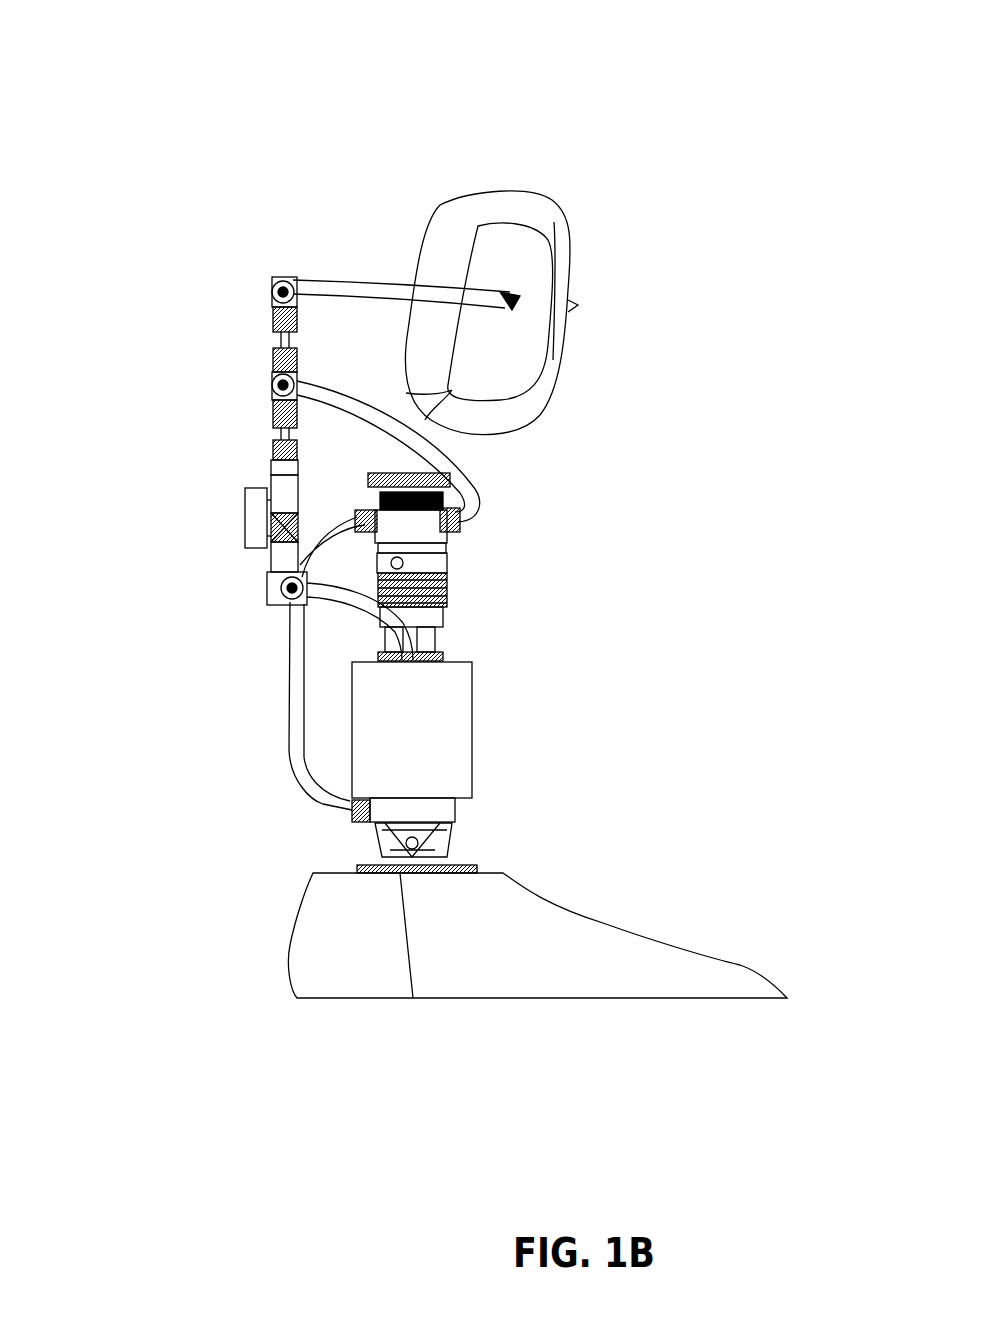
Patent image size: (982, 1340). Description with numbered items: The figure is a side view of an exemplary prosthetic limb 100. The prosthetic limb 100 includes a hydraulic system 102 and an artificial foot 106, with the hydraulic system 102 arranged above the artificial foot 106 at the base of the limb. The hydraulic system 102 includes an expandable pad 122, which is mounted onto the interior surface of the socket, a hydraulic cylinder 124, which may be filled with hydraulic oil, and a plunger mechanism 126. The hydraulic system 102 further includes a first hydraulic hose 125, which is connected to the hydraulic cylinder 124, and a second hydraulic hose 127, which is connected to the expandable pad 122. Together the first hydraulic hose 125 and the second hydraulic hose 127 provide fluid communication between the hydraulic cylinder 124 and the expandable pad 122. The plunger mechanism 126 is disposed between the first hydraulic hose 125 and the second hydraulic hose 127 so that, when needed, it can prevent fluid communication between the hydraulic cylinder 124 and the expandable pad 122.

The prosthetic limb 100 is at (40, 30).
The hydraulic system 102 is at (153, 183).
The artificial foot 106 is at (290, 955).
The expandable pad 122 is at (537, 195).
The hydraulic cylinder 124 is at (473, 700).
The first hydraulic hose 125 is at (307, 790).
The plunger mechanism 126 is at (440, 458).
The second hydraulic hose 127 is at (483, 518).